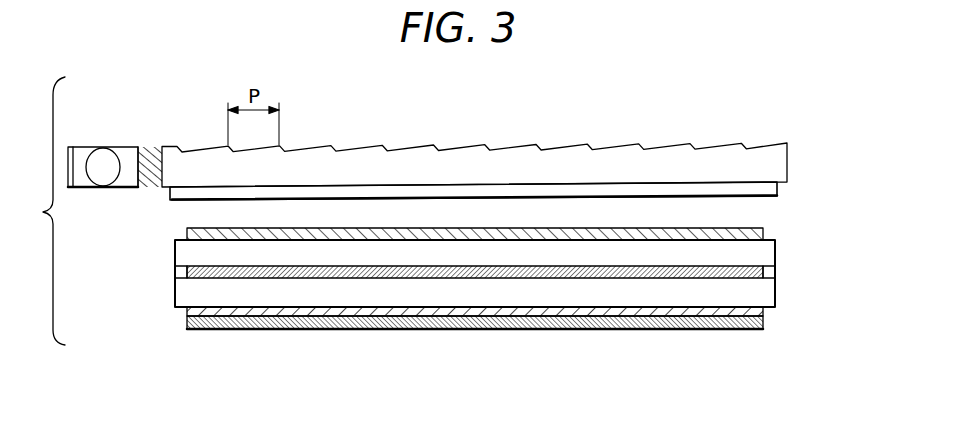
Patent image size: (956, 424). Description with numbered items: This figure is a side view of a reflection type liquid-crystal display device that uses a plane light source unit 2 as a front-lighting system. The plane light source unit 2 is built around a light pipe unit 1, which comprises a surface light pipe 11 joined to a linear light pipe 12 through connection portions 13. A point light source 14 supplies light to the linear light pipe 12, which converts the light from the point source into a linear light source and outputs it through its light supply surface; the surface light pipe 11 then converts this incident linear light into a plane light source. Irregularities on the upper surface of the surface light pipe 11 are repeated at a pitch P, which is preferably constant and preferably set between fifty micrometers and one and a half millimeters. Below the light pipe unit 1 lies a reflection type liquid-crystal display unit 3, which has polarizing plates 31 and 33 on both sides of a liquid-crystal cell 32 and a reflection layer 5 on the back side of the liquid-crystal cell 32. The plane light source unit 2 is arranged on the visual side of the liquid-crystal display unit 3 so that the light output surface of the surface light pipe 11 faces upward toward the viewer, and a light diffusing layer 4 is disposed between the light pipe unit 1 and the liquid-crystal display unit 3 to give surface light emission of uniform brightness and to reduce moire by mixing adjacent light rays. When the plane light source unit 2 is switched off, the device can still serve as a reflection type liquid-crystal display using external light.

The light pipe unit 1 is at (511, 150).
The plane light source unit 2 is at (123, 178).
The reflection type liquid-crystal display unit 3 is at (527, 271).
The light diffusing layer 4 is at (797, 162).
The reflection layer 5 is at (766, 326).
The surface light pipe 11 is at (468, 163).
The linear light pipe 12 is at (85, 147).
The connection portions 13 is at (153, 150).
The point light source 14 is at (108, 158).
The polarizing plate 31 is at (765, 229).
The liquid-crystal cell 32 is at (775, 252).
The polarizing plate 33 is at (512, 321).